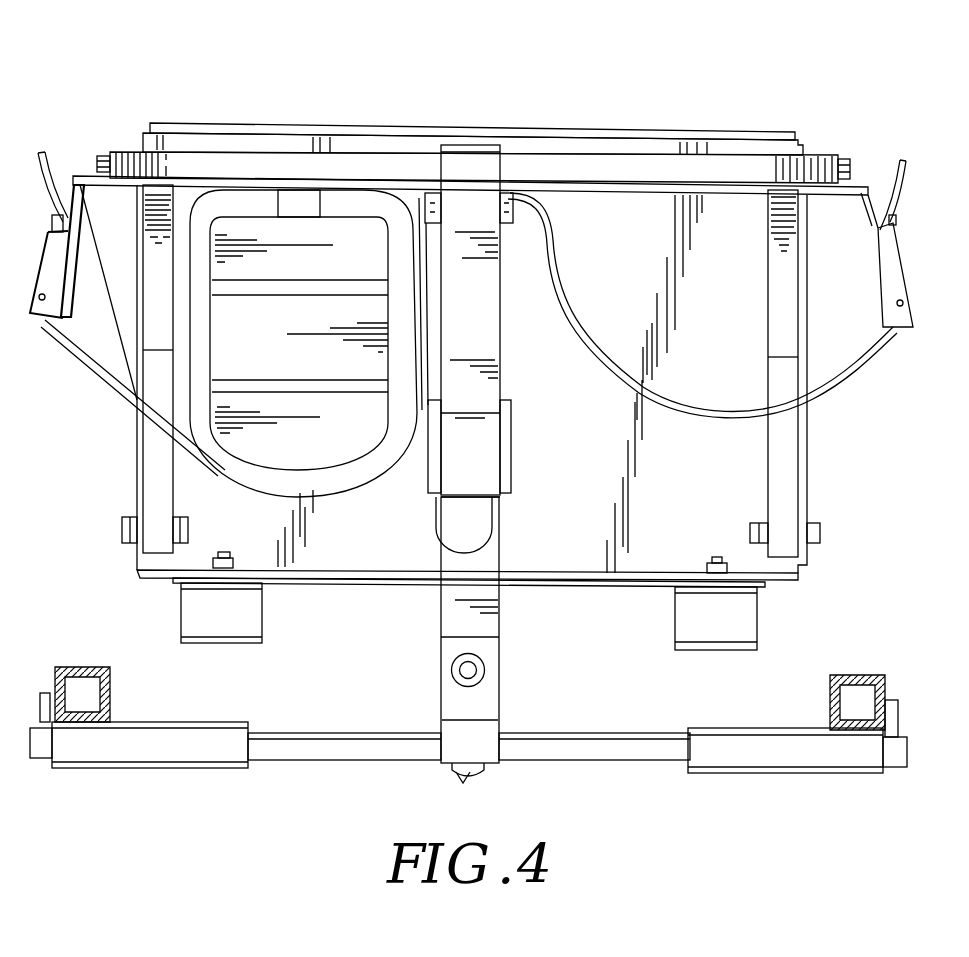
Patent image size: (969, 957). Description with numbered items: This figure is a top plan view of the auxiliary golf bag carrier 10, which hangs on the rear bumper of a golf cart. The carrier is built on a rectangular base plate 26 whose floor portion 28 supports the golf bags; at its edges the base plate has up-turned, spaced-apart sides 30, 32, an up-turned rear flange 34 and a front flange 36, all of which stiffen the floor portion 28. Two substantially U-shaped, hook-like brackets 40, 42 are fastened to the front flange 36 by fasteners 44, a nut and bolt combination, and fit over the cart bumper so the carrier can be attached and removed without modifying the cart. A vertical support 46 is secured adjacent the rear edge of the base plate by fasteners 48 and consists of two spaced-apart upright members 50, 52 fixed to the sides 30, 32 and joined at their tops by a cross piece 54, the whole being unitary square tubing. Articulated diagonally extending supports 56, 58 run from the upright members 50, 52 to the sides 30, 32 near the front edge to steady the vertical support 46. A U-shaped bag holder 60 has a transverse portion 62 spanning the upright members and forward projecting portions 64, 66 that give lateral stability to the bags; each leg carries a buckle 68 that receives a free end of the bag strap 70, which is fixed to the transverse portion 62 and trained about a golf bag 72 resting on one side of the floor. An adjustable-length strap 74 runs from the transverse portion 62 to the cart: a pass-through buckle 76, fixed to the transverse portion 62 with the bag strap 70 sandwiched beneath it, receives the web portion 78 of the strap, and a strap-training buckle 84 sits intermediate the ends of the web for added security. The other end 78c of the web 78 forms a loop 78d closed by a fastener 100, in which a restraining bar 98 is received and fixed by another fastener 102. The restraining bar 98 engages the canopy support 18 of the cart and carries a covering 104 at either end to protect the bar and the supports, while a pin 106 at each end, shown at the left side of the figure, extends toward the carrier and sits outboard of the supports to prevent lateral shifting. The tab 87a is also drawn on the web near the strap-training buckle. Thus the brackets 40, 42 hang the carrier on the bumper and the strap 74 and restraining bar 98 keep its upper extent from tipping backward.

The auxiliary golf bag carrier 10 is at (797, 87).
The canopy support 18 is at (108, 720).
The base plate 26 is at (608, 591).
The floor portion 28 is at (680, 492).
The side 30 is at (133, 436).
The side 32 is at (813, 502).
The rear flange 34 is at (320, 125).
The front flange 36 is at (765, 590).
The bracket 40 is at (237, 645).
The bracket 42 is at (745, 652).
The fastener 44 is at (233, 563).
The vertical support 46 is at (658, 146).
The fastener 48 is at (97, 163).
The upright member 50 is at (112, 152).
The upright member 52 is at (840, 160).
The cross piece 54 is at (542, 170).
The diagonally extending support 56 is at (125, 350).
The diagonally extending support 58 is at (758, 337).
The bag holder 60 is at (570, 208).
The transverse portion 62 is at (365, 182).
The forward projecting portion 64 is at (83, 210).
The forward projecting portion 66 is at (863, 227).
The buckle 68 is at (33, 320).
The bag strap 70 is at (732, 397).
The golf bag 72 is at (317, 473).
The adjustable-length strap 74 is at (524, 367).
The pass-through buckle 76 is at (517, 227).
The web portion 78 is at (508, 552).
The other end of web 78c is at (440, 617).
The loop 78d is at (458, 702).
The strap-training buckle 84 is at (517, 465).
The tab 87a is at (450, 517).
The restraining bar 98 is at (637, 767).
The fastener 100 is at (485, 668).
The fastener 102 is at (467, 782).
The covering 104 is at (207, 768).
The pin 106 is at (43, 700).